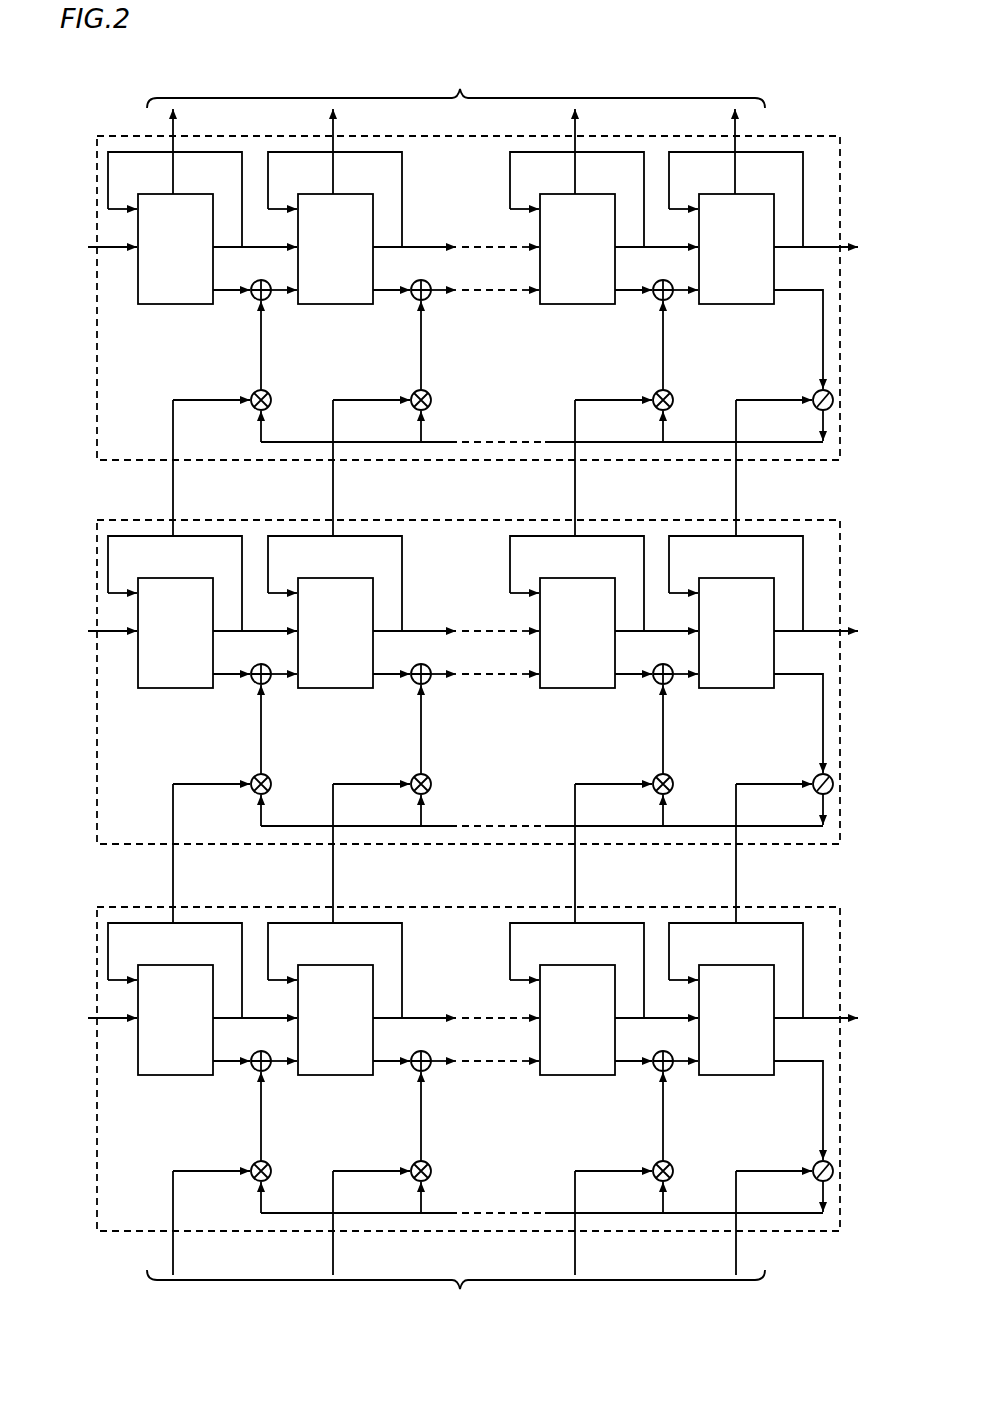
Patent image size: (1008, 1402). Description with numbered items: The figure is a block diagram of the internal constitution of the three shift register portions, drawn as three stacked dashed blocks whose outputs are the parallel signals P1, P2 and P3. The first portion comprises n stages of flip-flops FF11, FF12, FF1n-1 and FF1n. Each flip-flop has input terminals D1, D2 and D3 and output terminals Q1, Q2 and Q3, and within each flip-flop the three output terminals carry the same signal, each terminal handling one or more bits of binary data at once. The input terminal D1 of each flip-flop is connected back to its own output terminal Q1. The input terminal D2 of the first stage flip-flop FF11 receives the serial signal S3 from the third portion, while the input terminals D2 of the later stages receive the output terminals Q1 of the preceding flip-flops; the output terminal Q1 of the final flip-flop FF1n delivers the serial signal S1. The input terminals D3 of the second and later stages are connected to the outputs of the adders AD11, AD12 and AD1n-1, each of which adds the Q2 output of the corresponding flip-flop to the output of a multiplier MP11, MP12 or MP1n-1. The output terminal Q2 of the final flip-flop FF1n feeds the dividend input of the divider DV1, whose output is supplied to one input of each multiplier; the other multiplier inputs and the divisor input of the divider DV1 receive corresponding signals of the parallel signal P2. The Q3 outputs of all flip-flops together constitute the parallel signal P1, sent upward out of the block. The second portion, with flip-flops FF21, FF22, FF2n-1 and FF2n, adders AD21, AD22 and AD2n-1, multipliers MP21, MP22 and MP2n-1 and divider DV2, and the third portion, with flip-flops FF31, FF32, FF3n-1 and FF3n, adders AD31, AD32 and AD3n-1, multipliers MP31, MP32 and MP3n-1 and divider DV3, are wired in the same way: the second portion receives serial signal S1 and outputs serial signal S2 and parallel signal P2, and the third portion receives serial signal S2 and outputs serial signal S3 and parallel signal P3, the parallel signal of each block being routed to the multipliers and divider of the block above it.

The parallel signal P1 is at (468, 694).
The parallel signal P2 is at (468, 664).
The parallel signal P3 is at (468, 1049).
The serial signal S1 is at (474, 444).
The serial signal S2 is at (474, 830).
The serial signal S3 is at (474, 638).
The input terminal D1 is at (408, 190).
The input terminal D2 is at (408, 230).
The input terminal D3 is at (482, 274).
The output terminal Q1 is at (511, 229).
The output terminal Q2 is at (511, 268).
The output terminal Q3 is at (475, 174).
The first stage flip-flop FF11 is at (175, 228).
The flip-flop FF12 is at (335, 228).
The flip-flop FF1n-1 is at (577, 228).
The final flip-flop FF1n is at (736, 228).
The flip-flop FF21 is at (175, 612).
The flip-flop FF22 is at (335, 612).
The flip-flop FF2n-1 is at (577, 612).
The flip-flop FF2n is at (736, 612).
The flip-flop FF31 is at (175, 999).
The flip-flop FF32 is at (335, 999).
The flip-flop FF3n-1 is at (577, 999).
The flip-flop FF3n is at (736, 999).
The adder AD11 is at (252, 299).
The adder AD12 is at (412, 299).
The adder AD1n-1 is at (654, 300).
The adder AD21 is at (234, 719).
The adder AD22 is at (394, 719).
The adder AD2n-1 is at (630, 719).
The adder AD31 is at (234, 1106).
The adder AD32 is at (394, 1106).
The adder AD3n-1 is at (630, 1106).
The multiplier MP11 is at (253, 393).
The multiplier MP12 is at (413, 393).
The multiplier MP1n-1 is at (655, 394).
The multiplier MP21 is at (222, 773).
The multiplier MP22 is at (382, 773).
The multiplier MP2n-1 is at (624, 774).
The multiplier MP31 is at (222, 1160).
The multiplier MP32 is at (382, 1160).
The multiplier MP3n-1 is at (624, 1161).
The divider DV1 is at (834, 400).
The divider DV2 is at (817, 749).
The divider DV3 is at (817, 1136).